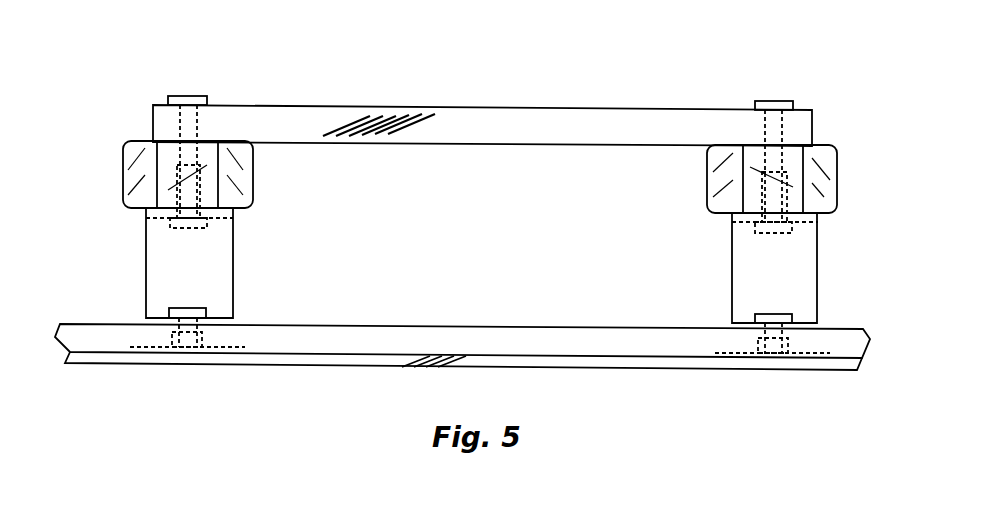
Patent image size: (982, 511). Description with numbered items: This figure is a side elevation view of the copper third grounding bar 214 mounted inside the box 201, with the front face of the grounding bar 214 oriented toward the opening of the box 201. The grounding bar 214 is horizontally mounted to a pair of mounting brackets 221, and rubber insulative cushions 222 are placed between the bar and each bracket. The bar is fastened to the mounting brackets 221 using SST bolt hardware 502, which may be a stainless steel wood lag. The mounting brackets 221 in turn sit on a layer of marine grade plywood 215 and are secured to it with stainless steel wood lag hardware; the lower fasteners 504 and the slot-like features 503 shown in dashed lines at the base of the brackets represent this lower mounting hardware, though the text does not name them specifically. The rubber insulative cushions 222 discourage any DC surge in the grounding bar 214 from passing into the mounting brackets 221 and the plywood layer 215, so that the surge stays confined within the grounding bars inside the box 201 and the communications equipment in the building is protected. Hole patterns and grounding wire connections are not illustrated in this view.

The box 201 is at (608, 368).
The copper third grounding bar 214 is at (578, 108).
The layer of marine grade plywood 215 is at (552, 327).
The mounting brackets 221 is at (233, 267).
The rubber insulative cushions 222 is at (122, 183).
The SST bolt hardware 502 is at (188, 84).
The mounting slot 503 is at (724, 352).
The lower fastening bolt 504 is at (775, 315).